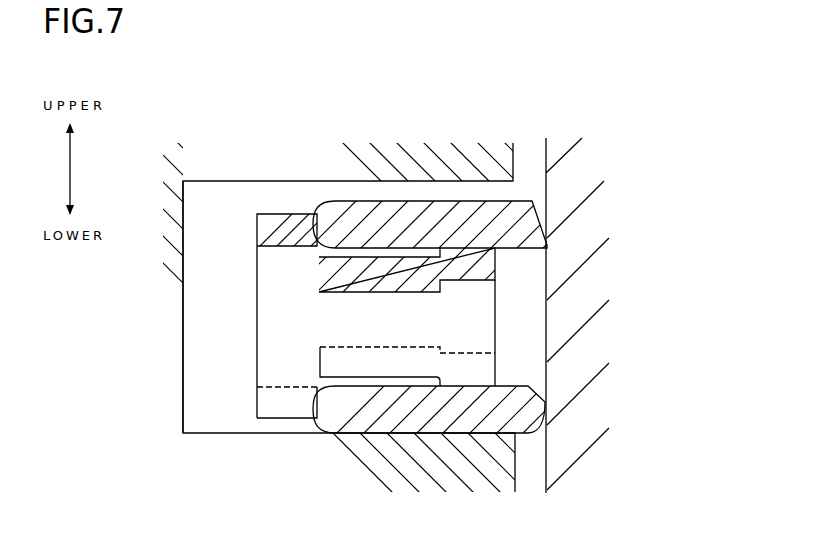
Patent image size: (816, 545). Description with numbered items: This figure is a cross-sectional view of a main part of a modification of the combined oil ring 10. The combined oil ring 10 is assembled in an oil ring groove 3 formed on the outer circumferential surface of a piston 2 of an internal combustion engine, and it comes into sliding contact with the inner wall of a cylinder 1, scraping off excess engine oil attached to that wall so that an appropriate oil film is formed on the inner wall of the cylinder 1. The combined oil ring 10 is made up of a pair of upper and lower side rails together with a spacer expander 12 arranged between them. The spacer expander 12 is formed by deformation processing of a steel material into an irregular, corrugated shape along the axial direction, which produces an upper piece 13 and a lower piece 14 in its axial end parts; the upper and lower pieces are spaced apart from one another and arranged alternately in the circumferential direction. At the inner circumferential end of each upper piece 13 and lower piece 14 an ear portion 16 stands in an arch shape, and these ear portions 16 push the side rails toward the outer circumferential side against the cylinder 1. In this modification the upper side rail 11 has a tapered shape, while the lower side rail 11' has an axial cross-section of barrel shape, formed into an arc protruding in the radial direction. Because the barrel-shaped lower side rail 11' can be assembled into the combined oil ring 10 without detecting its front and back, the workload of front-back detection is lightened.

The cylinder 1 is at (573, 189).
The piston 2 is at (385, 163).
The oil ring groove 3 is at (183, 348).
The combined oil ring 10 is at (436, 300).
The upper side rail 11 is at (374, 300).
The lower side rail 11' is at (543, 300).
The spacer expander 12 is at (467, 316).
The upper piece 13 is at (477, 265).
The lower piece 14 is at (478, 372).
The ear portion 16 is at (293, 230).